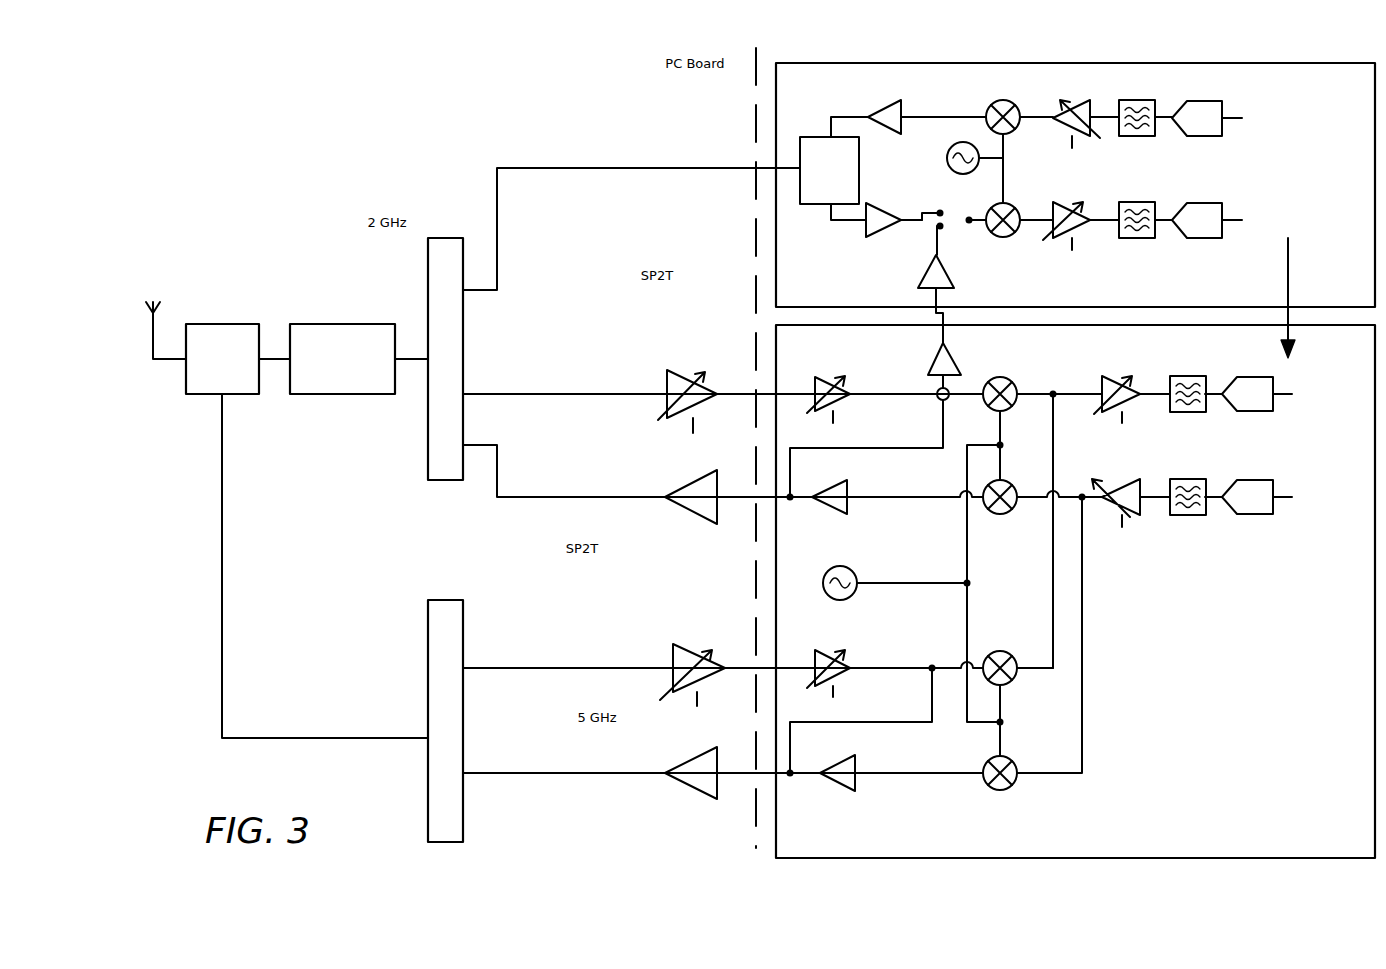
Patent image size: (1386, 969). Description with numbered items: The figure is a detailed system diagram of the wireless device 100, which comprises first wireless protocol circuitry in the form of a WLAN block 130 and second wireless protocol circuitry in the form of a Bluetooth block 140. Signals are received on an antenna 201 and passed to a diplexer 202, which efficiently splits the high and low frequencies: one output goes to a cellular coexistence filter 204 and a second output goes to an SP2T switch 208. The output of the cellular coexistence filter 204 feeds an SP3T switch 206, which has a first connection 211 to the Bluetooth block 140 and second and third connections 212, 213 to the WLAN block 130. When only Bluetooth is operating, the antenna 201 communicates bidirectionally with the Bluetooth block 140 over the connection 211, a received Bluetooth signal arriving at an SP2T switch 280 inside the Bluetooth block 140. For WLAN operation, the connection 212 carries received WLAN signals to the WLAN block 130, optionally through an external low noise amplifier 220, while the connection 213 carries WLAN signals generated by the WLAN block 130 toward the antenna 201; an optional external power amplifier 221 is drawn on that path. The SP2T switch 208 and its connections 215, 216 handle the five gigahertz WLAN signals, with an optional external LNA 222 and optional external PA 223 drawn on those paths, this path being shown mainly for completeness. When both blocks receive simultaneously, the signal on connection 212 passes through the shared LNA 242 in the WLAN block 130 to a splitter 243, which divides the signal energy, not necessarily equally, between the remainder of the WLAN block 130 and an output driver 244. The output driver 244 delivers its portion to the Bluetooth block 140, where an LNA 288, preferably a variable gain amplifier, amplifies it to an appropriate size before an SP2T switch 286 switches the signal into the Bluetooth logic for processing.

The wireless device 100 is at (281, 101).
The antenna 201 is at (152, 300).
The diplexer 202 is at (222, 359).
The cellular coexistence filter 204 is at (342, 359).
The single pole triple throw (SP3T) switch 206 is at (428, 456).
The single pole double throw (SP2T) switch 208 is at (434, 600).
The first connection 211 is at (583, 168).
The second connection 212 is at (522, 394).
The third connection 213 is at (548, 497).
The connection 215 is at (537, 668).
The connection 216 is at (547, 773).
The optional external low noise amplifier (xLNA) 220 is at (690, 370).
The optional external power amplifier (xPA) 221 is at (700, 480).
The optional external low noise amplifier (xLNA) 222 is at (672, 655).
The optional external power amplifier (xPA) 223 is at (690, 760).
The low noise amplifier (LNA) 242 is at (826, 378).
The splitter 243 is at (938, 399).
The output driver 244 is at (958, 360).
The SP2T switch 280 is at (829, 170).
The single pole double throw (SP2T) switch 286 is at (924, 213).
The LNA 288 is at (918, 285).
The second wireless protocol circuitry (Bluetooth block) 140 is at (1075, 210).
The first wireless protocol circuitry (WLAN block) 130 is at (1075, 590).